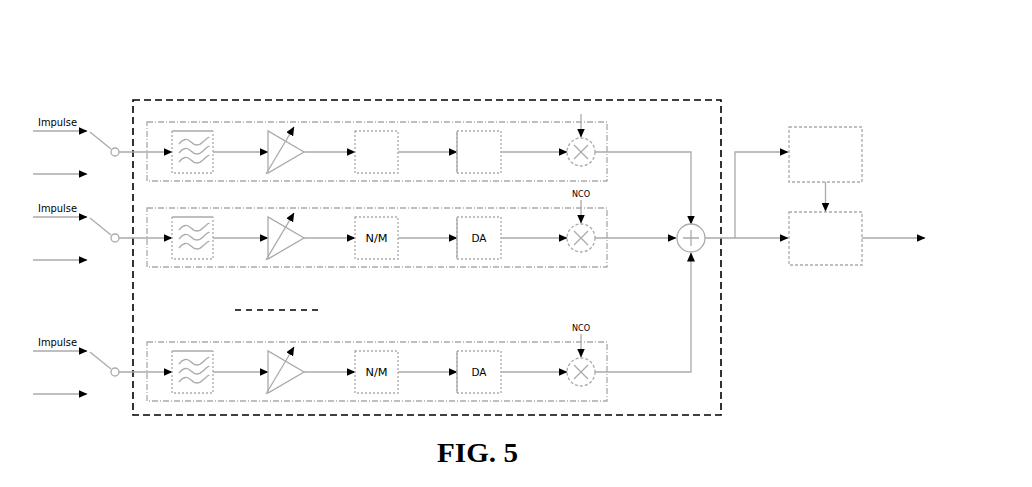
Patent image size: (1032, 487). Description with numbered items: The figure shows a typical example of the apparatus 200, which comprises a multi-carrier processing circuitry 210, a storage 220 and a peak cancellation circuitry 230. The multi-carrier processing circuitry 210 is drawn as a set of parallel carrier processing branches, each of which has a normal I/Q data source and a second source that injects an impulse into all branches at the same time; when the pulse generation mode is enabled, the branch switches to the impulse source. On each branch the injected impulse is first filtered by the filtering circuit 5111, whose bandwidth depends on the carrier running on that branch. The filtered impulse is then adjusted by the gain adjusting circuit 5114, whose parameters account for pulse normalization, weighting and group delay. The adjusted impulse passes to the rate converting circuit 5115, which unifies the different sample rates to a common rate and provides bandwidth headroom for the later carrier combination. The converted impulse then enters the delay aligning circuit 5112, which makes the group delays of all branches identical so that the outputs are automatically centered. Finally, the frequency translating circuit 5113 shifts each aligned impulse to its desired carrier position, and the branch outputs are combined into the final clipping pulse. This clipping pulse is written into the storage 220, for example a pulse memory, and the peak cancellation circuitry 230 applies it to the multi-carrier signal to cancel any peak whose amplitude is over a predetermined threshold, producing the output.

The apparatus 200 is at (647, 73).
The multi-carrier processing circuitry 210 is at (483, 100).
The filtering circuit 5111 is at (211, 138).
The gain adjusting circuit 5114 is at (293, 141).
The rate converting circuit 5115 is at (386, 139).
The delay aligning circuit 5112 is at (488, 139).
The frequency translating circuit 5113 is at (599, 134).
The storage 220 is at (825, 127).
The peak cancellation circuitry 230 is at (826, 266).